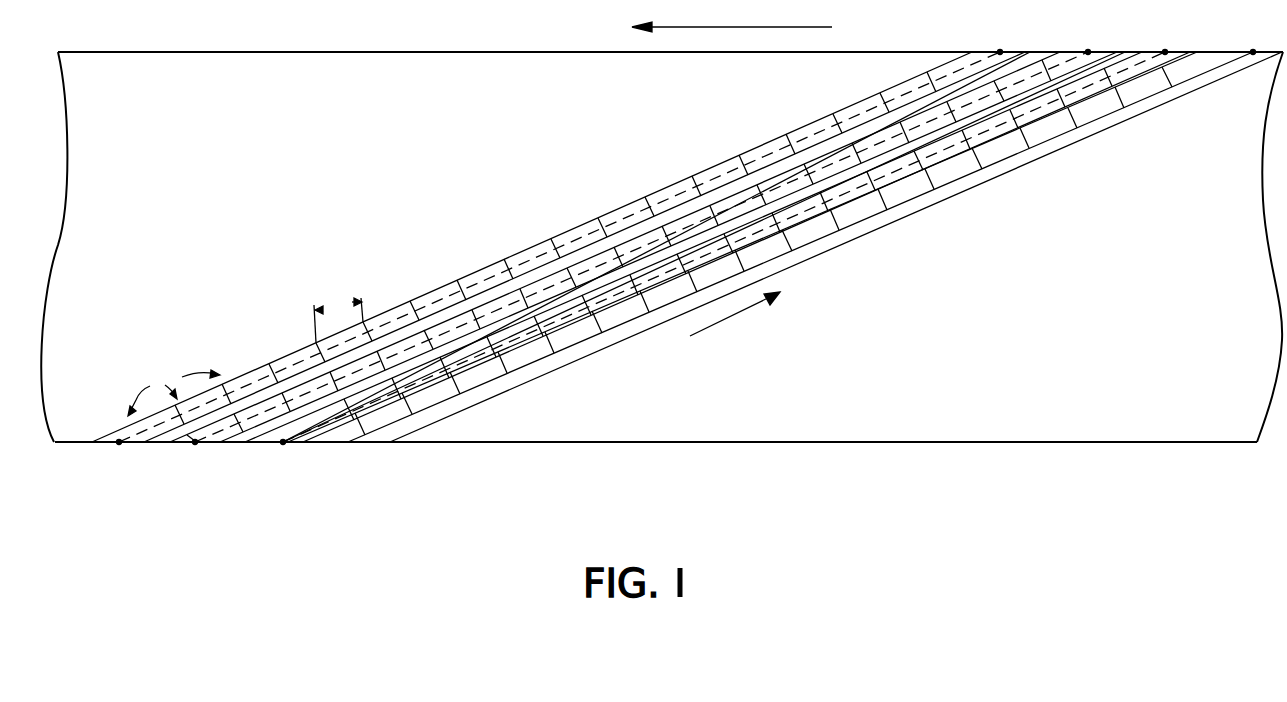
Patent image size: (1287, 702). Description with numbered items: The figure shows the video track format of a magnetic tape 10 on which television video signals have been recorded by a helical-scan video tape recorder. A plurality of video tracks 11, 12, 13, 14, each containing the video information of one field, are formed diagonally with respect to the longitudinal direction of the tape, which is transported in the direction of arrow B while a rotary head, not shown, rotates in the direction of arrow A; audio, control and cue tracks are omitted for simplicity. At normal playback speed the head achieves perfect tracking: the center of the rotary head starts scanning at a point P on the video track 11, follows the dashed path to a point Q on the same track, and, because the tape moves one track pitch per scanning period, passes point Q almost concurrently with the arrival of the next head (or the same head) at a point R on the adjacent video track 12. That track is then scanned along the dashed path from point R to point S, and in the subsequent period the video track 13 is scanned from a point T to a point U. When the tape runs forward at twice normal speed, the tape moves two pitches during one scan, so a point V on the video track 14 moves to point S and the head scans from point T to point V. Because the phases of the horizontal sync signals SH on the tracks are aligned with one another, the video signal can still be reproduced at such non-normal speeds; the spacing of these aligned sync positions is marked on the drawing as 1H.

The magnetic tape 10 is at (1108, 442).
The video track 11 is at (443, 288).
The video track 12 is at (483, 305).
The video track 13 is at (507, 345).
The video track 14 is at (582, 348).
The point P is at (119, 446).
The point Q is at (1000, 49).
The point R is at (195, 446).
The point S is at (1088, 49).
The point T is at (283, 446).
The point U is at (1165, 49).
The point V is at (1253, 49).
The arrow A is at (735, 317).
The arrow B is at (732, 16).
The horizontal sync signals SH is at (174, 390).
The one horizontal period 1H' 1H is at (338, 320).